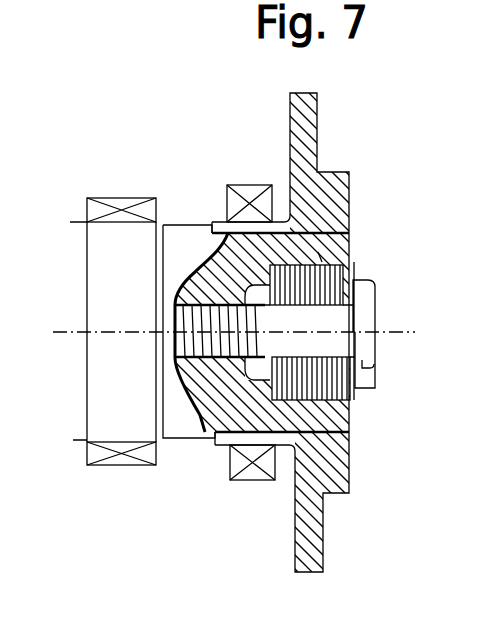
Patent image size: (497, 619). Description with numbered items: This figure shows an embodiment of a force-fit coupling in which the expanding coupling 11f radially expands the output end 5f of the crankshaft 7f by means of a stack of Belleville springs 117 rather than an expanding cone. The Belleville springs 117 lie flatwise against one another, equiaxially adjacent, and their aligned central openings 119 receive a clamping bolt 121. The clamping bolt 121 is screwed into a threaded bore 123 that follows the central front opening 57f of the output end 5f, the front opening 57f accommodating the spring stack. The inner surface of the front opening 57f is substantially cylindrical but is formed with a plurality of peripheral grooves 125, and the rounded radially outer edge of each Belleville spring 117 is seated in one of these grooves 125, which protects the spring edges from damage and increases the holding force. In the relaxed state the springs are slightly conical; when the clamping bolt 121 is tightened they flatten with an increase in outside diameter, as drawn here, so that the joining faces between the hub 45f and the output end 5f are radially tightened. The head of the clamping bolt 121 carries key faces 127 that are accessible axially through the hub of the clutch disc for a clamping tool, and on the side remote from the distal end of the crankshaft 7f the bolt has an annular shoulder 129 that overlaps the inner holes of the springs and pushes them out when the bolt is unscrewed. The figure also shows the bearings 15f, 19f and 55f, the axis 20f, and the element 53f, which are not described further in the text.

The output end 5f is at (200, 237).
The crankshaft 7f is at (95, 252).
The expanding coupling 11f is at (378, 226).
The bearing 15f is at (242, 190).
The bearing 19f is at (118, 202).
The axis 20f is at (60, 333).
The hub 45f is at (338, 187).
The friction ring 53f is at (338, 432).
The bearing 55f is at (237, 451).
The front opening 57f is at (352, 393).
The Belleville springs 117 is at (340, 273).
The central openings 119 is at (355, 290).
The clamping bolt 121 is at (335, 347).
The threaded bore 123 is at (200, 440).
The peripheral grooves 125 is at (320, 258).
The key faces 127 is at (363, 366).
The annular shoulder 129 is at (234, 215).